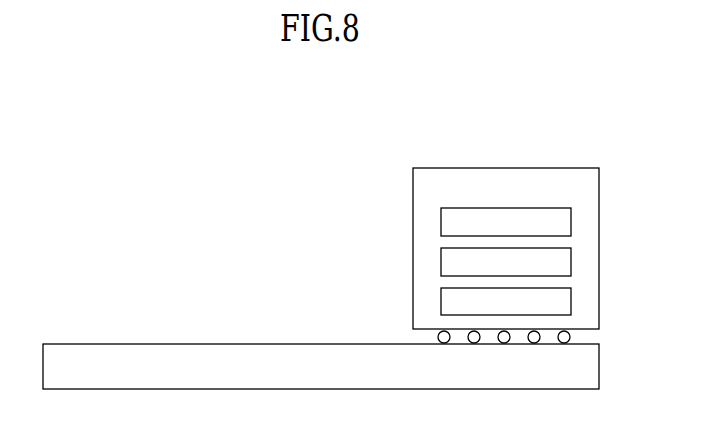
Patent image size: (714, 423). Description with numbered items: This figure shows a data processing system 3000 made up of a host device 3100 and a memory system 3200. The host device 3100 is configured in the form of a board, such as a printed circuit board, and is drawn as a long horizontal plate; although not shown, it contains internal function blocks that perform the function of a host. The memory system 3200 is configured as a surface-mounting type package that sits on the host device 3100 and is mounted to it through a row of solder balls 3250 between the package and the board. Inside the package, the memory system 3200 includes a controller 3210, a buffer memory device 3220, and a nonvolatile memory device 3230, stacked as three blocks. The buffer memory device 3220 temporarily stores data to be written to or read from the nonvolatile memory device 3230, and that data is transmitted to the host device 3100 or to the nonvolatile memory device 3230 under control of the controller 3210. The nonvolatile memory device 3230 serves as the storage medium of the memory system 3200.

The data processing system 3000 is at (112, 143).
The host device 3100 is at (321, 366).
The memory system 3200 is at (506, 248).
The controller 3210 is at (506, 222).
The buffer memory device 3220 is at (506, 262).
The nonvolatile memory device 3230 is at (506, 301).
The solder balls 3250 is at (582, 337).